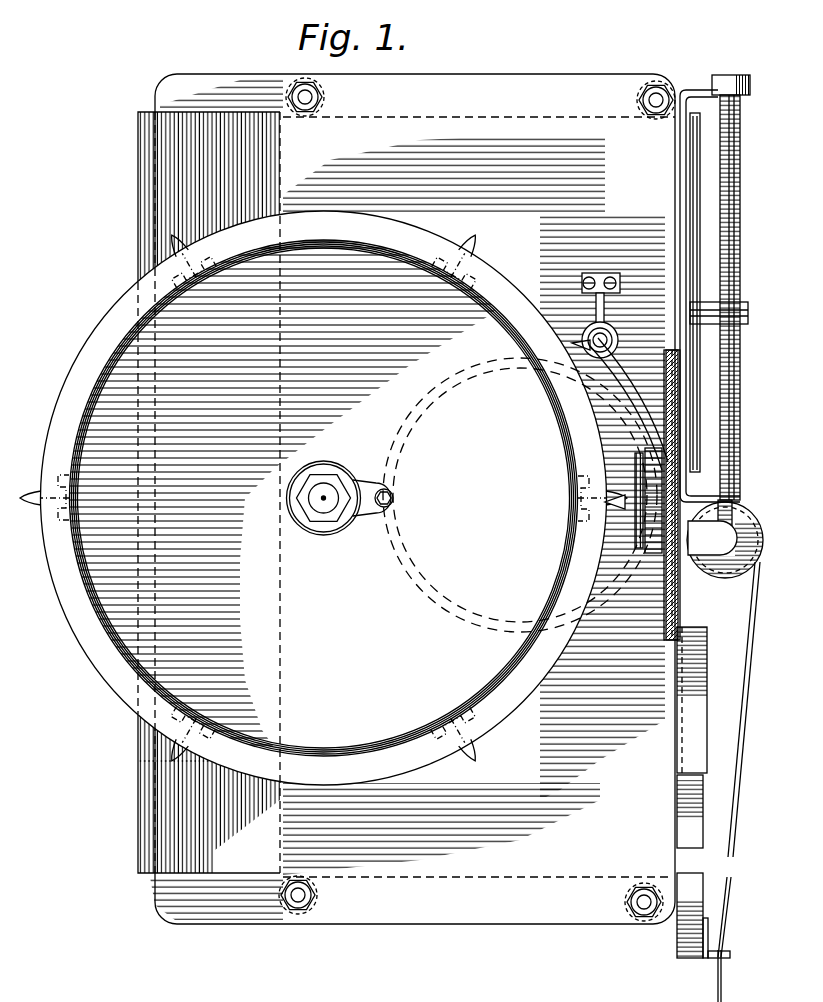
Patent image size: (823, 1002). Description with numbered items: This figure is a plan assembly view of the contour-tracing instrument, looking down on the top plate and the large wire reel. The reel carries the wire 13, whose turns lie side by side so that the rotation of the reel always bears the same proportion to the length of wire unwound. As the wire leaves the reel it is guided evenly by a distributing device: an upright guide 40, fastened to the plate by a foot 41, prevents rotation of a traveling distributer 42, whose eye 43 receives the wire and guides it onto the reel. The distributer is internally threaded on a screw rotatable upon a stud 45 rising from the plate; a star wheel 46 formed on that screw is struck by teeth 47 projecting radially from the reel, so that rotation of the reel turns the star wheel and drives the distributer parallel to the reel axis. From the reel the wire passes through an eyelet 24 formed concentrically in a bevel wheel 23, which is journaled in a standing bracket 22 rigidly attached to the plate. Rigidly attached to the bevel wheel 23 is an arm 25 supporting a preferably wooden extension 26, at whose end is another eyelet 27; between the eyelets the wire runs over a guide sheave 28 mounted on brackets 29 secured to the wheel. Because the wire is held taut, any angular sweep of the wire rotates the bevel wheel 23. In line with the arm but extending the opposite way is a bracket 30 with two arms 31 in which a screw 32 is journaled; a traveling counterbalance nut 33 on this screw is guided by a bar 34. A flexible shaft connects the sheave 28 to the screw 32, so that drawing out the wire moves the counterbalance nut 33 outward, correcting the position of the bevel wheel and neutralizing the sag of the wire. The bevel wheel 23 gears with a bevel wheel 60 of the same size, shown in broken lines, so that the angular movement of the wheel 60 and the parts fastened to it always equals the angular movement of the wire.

The wire 13 is at (740, 793).
The standing bracket 22 is at (656, 492).
The bevel wheel 23 is at (676, 626).
The eyelet 24 is at (640, 520).
The arm 25 is at (702, 705).
The extension 26 is at (690, 932).
The eyelet 27 is at (729, 956).
The guide sheave 28 is at (740, 522).
The brackets 29 is at (710, 552).
The bracket 30 is at (681, 130).
The arms 31 is at (745, 96).
The screw 32 is at (739, 396).
The traveling counterbalance nut 33 is at (746, 310).
The bar 34 is at (693, 205).
The upright guide 40 is at (606, 300).
The foot 41 is at (600, 278).
The traveling distributer 42 is at (606, 326).
The eye 43 is at (572, 345).
The stud 45 is at (598, 356).
The star wheel 46 is at (622, 372).
The teeth 47 is at (176, 231).
The bevel wheel 60 is at (446, 620).